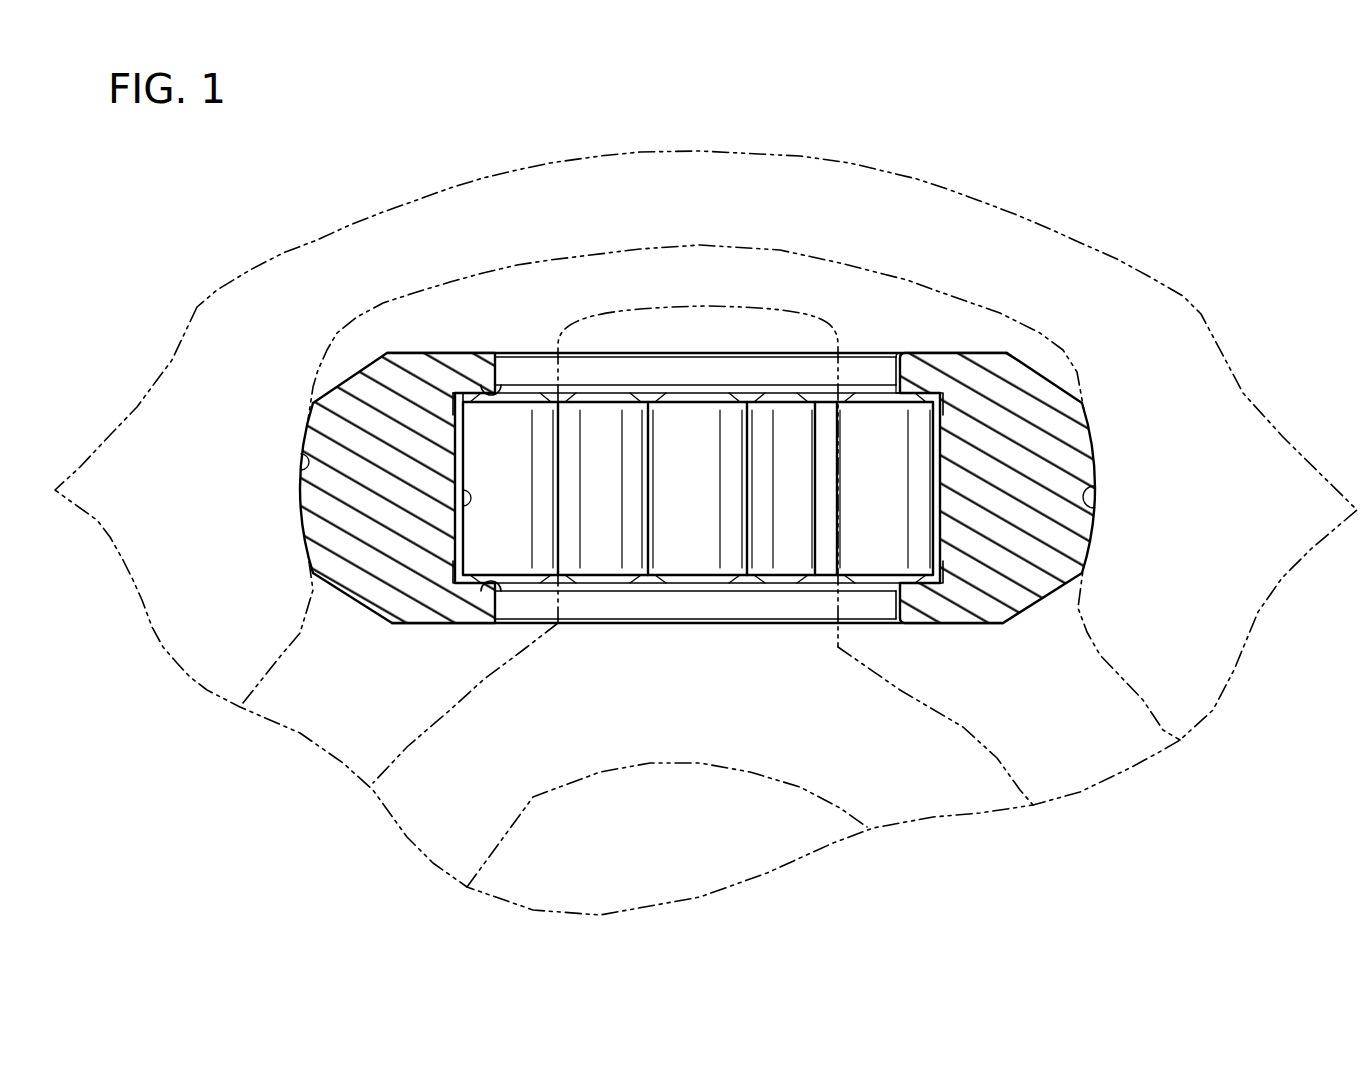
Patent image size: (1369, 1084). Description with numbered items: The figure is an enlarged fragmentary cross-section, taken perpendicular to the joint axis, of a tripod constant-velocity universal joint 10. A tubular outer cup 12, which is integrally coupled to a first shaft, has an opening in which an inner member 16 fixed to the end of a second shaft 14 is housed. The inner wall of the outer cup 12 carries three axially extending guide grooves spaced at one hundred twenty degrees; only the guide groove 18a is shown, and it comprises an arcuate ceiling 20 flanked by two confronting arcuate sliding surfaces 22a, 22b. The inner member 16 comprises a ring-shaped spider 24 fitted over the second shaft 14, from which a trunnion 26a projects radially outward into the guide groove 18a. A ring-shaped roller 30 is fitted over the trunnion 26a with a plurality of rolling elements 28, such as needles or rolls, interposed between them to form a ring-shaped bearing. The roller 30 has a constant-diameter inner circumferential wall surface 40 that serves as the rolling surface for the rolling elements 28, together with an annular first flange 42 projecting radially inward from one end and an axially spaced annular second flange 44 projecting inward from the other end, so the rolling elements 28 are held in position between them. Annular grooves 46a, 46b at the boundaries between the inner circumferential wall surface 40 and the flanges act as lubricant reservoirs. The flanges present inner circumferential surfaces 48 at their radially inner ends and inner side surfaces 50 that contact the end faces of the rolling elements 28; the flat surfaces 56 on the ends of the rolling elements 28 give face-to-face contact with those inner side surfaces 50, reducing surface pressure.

The tripod constant-velocity universal joint 10 is at (1054, 135).
The outer cup 12 is at (1126, 256).
The second shaft 14 is at (690, 845).
The inner member 16 is at (1024, 753).
The guide groove 18a is at (712, 275).
The ceiling 20 is at (623, 258).
The sliding surface 22a is at (453, 530).
The sliding surface 22b is at (1092, 485).
The spider 24 is at (473, 765).
The trunnion 26a is at (775, 318).
The rolling elements 28 is at (890, 458).
The roller 30 is at (892, 348).
The inner circumferential wall surface 40 is at (463, 493).
The first flange 42 is at (914, 368).
The second flange 44 is at (913, 606).
The annular groove 46a is at (461, 392).
The annular groove 46b is at (407, 623).
The inner circumferential surfaces 48 is at (874, 354).
The inner side surfaces 50 is at (505, 385).
The flat surfaces 56 is at (687, 391).